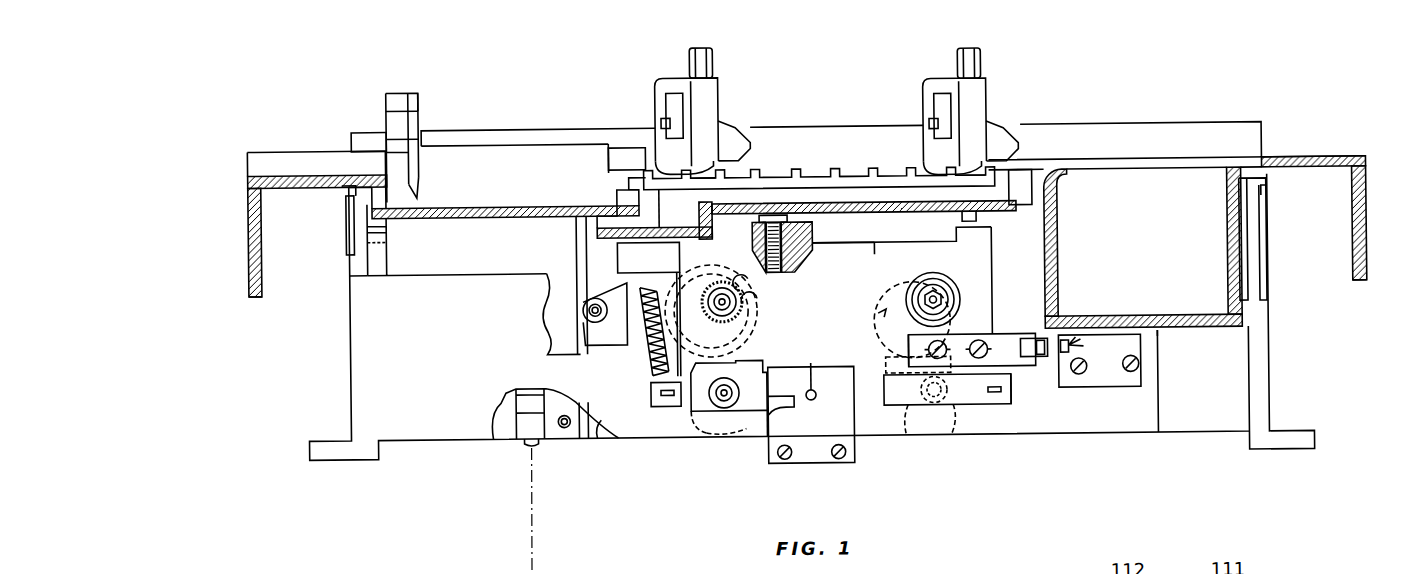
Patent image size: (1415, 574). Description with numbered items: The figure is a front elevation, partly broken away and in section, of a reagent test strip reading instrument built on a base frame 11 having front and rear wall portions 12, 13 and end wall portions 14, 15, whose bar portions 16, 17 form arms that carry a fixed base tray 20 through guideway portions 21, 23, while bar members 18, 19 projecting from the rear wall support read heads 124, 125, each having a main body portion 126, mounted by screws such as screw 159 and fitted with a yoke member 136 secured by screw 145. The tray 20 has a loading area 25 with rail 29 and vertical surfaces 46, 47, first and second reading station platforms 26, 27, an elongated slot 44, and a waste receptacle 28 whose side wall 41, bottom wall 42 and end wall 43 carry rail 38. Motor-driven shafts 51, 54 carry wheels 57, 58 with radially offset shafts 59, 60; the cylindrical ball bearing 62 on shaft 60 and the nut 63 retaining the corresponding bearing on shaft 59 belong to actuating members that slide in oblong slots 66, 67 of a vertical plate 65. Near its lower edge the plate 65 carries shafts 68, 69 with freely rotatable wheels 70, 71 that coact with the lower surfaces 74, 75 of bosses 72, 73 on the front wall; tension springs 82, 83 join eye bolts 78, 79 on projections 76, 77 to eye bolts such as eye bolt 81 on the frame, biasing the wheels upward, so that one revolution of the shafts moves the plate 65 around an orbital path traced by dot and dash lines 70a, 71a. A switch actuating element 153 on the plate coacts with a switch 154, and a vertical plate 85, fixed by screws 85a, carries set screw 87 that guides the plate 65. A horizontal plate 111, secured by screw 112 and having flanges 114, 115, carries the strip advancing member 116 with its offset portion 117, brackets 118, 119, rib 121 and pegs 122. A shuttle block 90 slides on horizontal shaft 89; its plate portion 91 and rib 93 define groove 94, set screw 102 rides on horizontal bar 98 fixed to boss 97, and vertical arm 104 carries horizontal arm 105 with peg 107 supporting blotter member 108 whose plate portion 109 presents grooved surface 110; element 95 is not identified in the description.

The base frame 11 is at (1282, 359).
The front wall portion 12 is at (368, 340).
The rear wall portion 13 is at (483, 126).
The end wall portion 14 is at (348, 304).
The end wall portion 15 is at (1275, 334).
The bar portion 16 is at (344, 190).
The bar portion 17 is at (1270, 190).
The horizontal bar member 18 is at (670, 112).
The horizontal bar member 19 is at (940, 110).
The fixed base tray 20 is at (251, 302).
The guideway portion 21 is at (348, 208).
The guideway portion 23 is at (1270, 215).
The loading area 25 is at (496, 189).
The first reading station platform 26 is at (710, 185).
The second reading station platform 27 is at (971, 187).
The waste receptacle 28 is at (1162, 263).
The rail 29 is at (510, 172).
The rail 38 is at (1138, 314).
The left hand side wall 41 is at (1060, 262).
The bottom wall 42 is at (1192, 331).
The right hand end wall 43 is at (1230, 265).
The elongated slot 44 is at (850, 182).
The vertical surface portion 46 is at (498, 145).
The vertical surface 47 is at (622, 148).
The shaft 51 is at (878, 316).
The shaft 54 is at (736, 332).
The wheel 57 is at (884, 290).
The wheel 58 is at (711, 311).
The offset shaft 59 is at (942, 306).
The offset shaft 60 is at (742, 308).
The cylindrical ball bearing 62 is at (745, 300).
The nut 63 is at (931, 280).
The vertically disposed rectangular plate 65 is at (834, 322).
The oblong slot 66 is at (962, 290).
The oblong slot 67 is at (755, 291).
The shaft 68 is at (947, 389).
The shaft 69 is at (740, 388).
The wheel 70 is at (935, 420).
The dot and dash line 70a is at (910, 420).
The wheel 71 is at (726, 420).
The dot and dash line 71a is at (702, 424).
The boss 72 is at (906, 351).
The boss 73 is at (745, 364).
The lower surface 74 is at (892, 380).
The lower surface 75 is at (660, 391).
The projection 76 is at (1012, 396).
The projection 77 is at (655, 398).
The eye bolt 78 is at (990, 410).
The eye bolt 79 is at (668, 416).
The eye bolt 81 is at (652, 288).
The helical tension spring 82 is at (1008, 372).
The helical tension spring 83 is at (652, 340).
The vertical plate 85 is at (823, 429).
The screws 85a is at (830, 460).
The set screw 87 is at (809, 368).
The horizontal shaft 89 is at (352, 266).
The shuttle block 90 is at (487, 255).
The vertical plate portion 91 is at (548, 318).
The vertical rib 93 is at (590, 434).
The vertical groove 94 is at (582, 254).
The pivot screw 95 is at (590, 297).
The boss 97 is at (518, 408).
The horizontal bar 98 is at (530, 424).
The set screw 102 is at (533, 448).
The vertical arm 104 is at (398, 130).
The horizontal arm 105 is at (398, 115).
The locating and retaining peg 107 is at (402, 90).
The blotter member 108 is at (418, 92).
The vertical rectangular plate portion 109 is at (353, 136).
The planar surface 110 is at (420, 170).
The horizontal plate 111 is at (875, 250).
The screw 112 is at (790, 256).
The flange 114 is at (950, 280).
The flange 115 is at (718, 222).
The reagent strip advancing member 116 is at (1034, 206).
The downwardly offset portion 117 is at (660, 222).
The bracket 118 is at (978, 218).
The bracket 119 is at (752, 238).
The rib 121 is at (872, 210).
The test strip engaging pegs 122 is at (834, 168).
The read head 124 is at (764, 142).
The read head 125 is at (1020, 130).
The main body portion 126 is at (726, 112).
The yoke member 136 is at (658, 100).
The screw 145 is at (690, 52).
The switch actuating element 153 is at (1027, 340).
The switch 154 is at (1062, 340).
The screw 159 is at (690, 122).